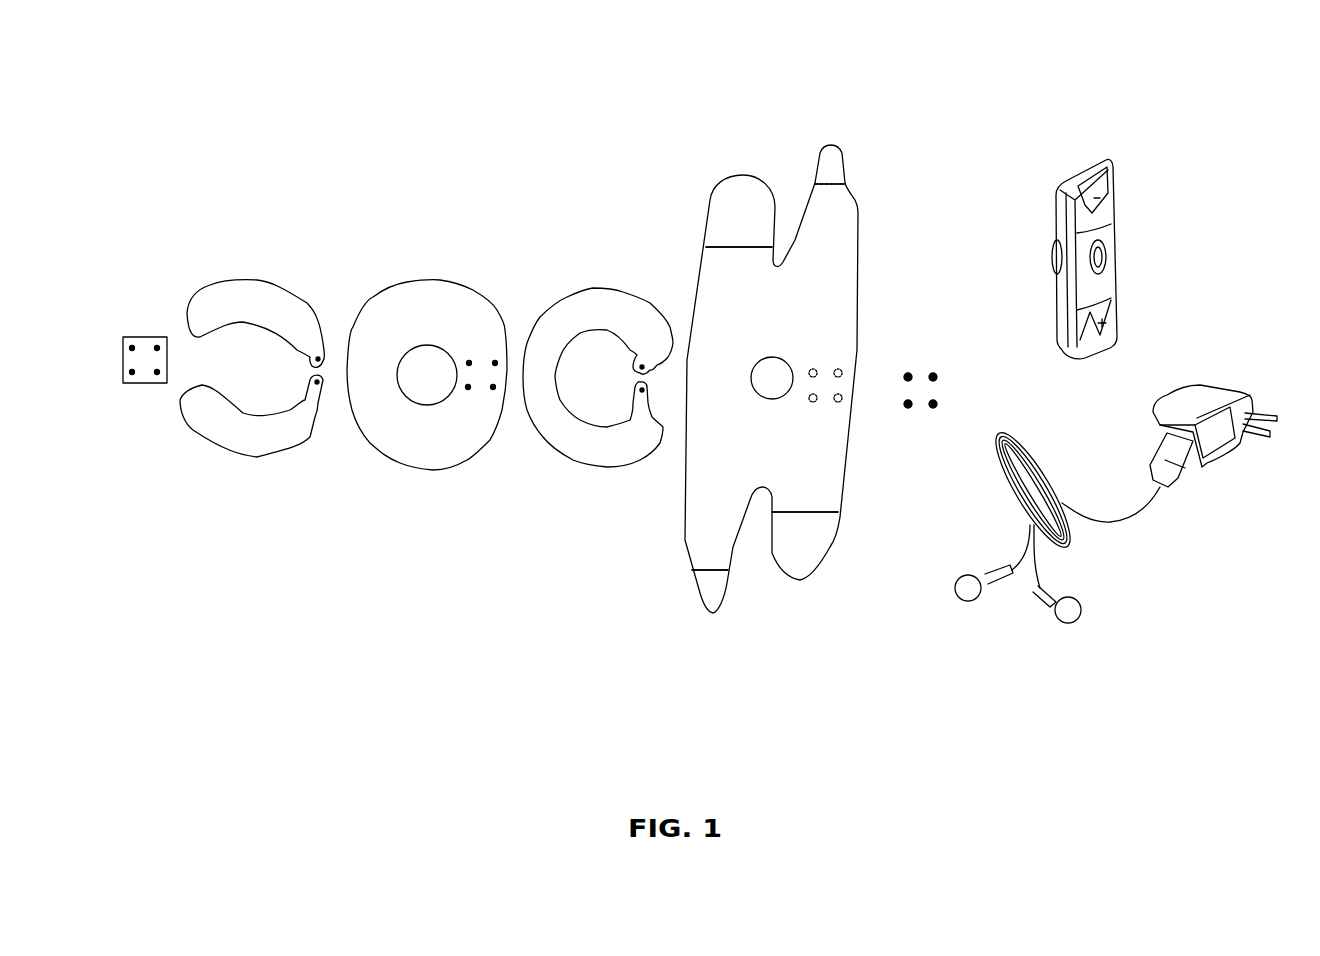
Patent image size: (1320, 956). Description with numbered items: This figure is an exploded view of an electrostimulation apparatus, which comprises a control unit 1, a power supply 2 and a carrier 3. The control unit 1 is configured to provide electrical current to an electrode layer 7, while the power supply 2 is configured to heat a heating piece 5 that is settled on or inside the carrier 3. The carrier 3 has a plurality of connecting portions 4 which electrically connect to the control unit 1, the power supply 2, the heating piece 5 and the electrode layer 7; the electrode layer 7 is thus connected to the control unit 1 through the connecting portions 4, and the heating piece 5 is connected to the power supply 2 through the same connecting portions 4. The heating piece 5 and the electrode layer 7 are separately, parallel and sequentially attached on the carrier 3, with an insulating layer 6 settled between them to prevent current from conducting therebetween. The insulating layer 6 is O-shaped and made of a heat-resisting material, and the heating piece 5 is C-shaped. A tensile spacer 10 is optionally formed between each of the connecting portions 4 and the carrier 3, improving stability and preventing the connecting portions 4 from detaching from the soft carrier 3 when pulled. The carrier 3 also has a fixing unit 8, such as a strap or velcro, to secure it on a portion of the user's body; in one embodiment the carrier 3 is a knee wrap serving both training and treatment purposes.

The control unit 1 is at (1100, 160).
The power supply 2 is at (1213, 393).
The carrier 3 is at (762, 177).
The connecting portions 4 is at (922, 363).
The heating piece 5 is at (605, 283).
The insulating layer 6 is at (445, 270).
The electrode layer 7 is at (262, 277).
The fixing unit 8 is at (710, 588).
The tensile spacer 10 is at (148, 337).